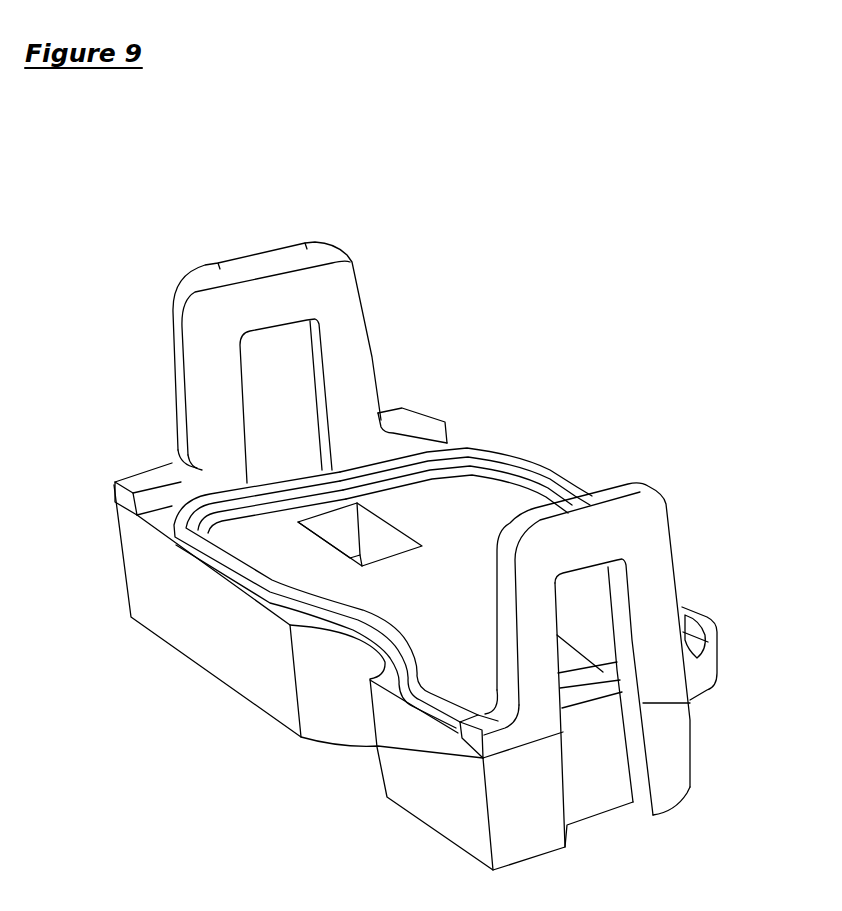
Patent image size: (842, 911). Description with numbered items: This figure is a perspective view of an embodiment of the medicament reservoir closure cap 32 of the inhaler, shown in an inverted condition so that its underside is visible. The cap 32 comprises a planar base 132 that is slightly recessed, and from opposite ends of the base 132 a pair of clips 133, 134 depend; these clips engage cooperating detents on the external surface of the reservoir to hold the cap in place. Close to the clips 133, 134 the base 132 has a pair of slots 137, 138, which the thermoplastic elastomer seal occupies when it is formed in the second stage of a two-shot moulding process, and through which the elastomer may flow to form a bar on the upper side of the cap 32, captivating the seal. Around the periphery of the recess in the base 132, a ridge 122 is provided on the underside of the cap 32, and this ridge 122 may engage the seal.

The cap 32 is at (568, 231).
The ridge 122 is at (252, 582).
The planar base 132 is at (488, 515).
The clip 133 is at (345, 298).
The clip 134 is at (693, 400).
The slot 137 is at (383, 537).
The slot 138 is at (583, 670).